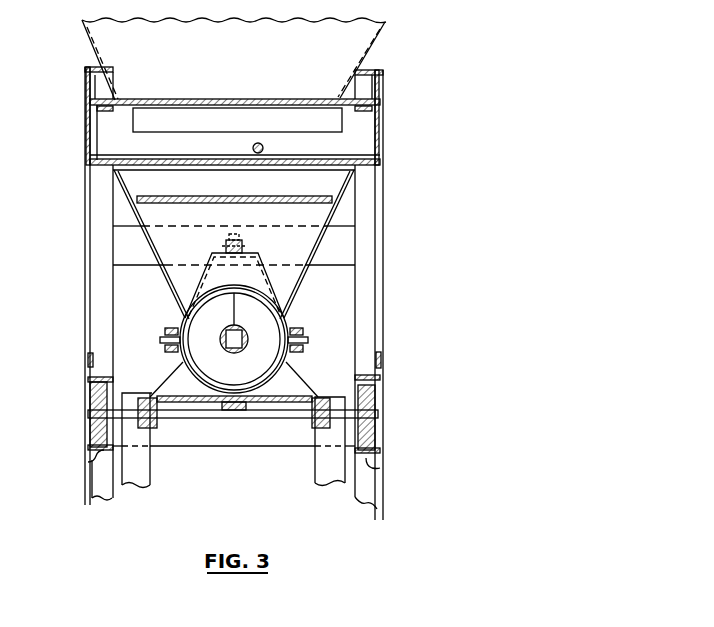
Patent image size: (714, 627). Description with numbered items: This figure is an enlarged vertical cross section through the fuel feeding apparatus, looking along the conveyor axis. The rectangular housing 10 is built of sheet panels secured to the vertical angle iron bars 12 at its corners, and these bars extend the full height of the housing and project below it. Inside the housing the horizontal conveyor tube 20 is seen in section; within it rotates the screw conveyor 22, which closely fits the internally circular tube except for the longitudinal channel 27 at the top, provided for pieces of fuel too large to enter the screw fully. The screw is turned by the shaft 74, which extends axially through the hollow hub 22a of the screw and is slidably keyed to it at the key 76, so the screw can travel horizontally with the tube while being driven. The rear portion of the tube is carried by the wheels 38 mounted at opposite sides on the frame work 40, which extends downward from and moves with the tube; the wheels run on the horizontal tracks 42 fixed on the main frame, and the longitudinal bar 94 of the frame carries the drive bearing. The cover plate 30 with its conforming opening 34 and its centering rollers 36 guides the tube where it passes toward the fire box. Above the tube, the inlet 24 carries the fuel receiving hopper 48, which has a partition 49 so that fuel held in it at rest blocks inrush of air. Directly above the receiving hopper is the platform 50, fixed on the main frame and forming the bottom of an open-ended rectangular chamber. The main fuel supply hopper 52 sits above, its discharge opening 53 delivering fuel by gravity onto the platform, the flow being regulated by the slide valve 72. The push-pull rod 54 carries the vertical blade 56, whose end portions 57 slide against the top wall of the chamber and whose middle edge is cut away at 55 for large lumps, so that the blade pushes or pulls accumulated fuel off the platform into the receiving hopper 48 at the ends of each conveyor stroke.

The housing 10 is at (87, 293).
The vertical angle iron bar 12 is at (103, 316).
The conveyor tube 20 is at (289, 321).
The screw conveyor 22 is at (262, 352).
The hollow hub 22a is at (222, 341).
The inlet 24 is at (248, 283).
The longitudinal channel 27 is at (243, 271).
The cover plate 30 is at (124, 269).
The opening 34 is at (184, 319).
The rollers 36 is at (164, 341).
The wheels 38 is at (95, 393).
The frame work 40 is at (135, 465).
The horizontal tracks 42 is at (92, 461).
The fuel receiving hopper 48 is at (330, 217).
The partition 49 is at (264, 214).
The platform 50 is at (358, 164).
The main fuel supply hopper 52 is at (377, 43).
The discharge opening 53 is at (248, 100).
The push-pull rod 54 is at (264, 148).
The cut-away portion 55 is at (222, 132).
The blade 56 is at (192, 145).
The end portions 57 is at (127, 121).
The slide valve 72 is at (292, 106).
The shaft 74 is at (245, 340).
The key 76 is at (238, 330).
The longitudinal bar 94 is at (92, 360).